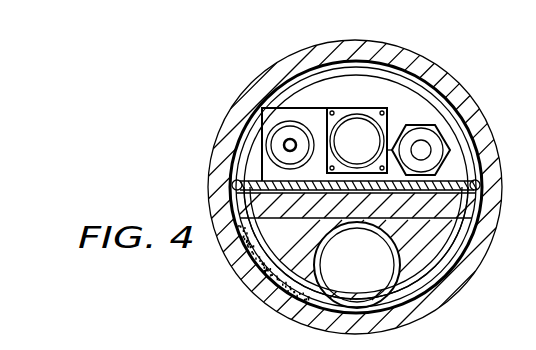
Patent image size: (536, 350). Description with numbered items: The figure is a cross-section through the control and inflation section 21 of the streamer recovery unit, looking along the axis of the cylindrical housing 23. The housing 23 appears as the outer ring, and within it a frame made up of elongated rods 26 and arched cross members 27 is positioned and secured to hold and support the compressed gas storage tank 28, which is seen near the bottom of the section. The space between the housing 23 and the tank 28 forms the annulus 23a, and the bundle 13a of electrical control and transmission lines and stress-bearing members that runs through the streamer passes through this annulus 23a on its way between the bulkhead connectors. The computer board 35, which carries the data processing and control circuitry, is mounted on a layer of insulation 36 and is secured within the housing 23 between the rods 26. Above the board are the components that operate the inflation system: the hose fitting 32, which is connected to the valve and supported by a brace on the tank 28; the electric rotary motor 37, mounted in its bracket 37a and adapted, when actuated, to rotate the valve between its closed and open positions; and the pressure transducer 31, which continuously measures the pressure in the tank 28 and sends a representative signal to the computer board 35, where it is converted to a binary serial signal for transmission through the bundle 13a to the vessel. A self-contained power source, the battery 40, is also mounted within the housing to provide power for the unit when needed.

The control and inflation section 21 is at (249, 61).
The cylindrical housing 23 is at (431, 68).
The annulus 23a is at (415, 298).
The arched cross members 27 is at (320, 62).
The bracket 37a is at (262, 112).
The hose fitting 32 is at (266, 140).
The computer board 35 is at (258, 184).
The elongated rods 26 is at (232, 184).
The pressure transducer 31 is at (425, 150).
The layer of insulation 36 is at (490, 236).
The compressed gas storage tank 28 is at (452, 258).
The bundle 13a is at (252, 270).
The electric rotary motor 37 is at (370, 151).
The battery 40 is at (372, 271).